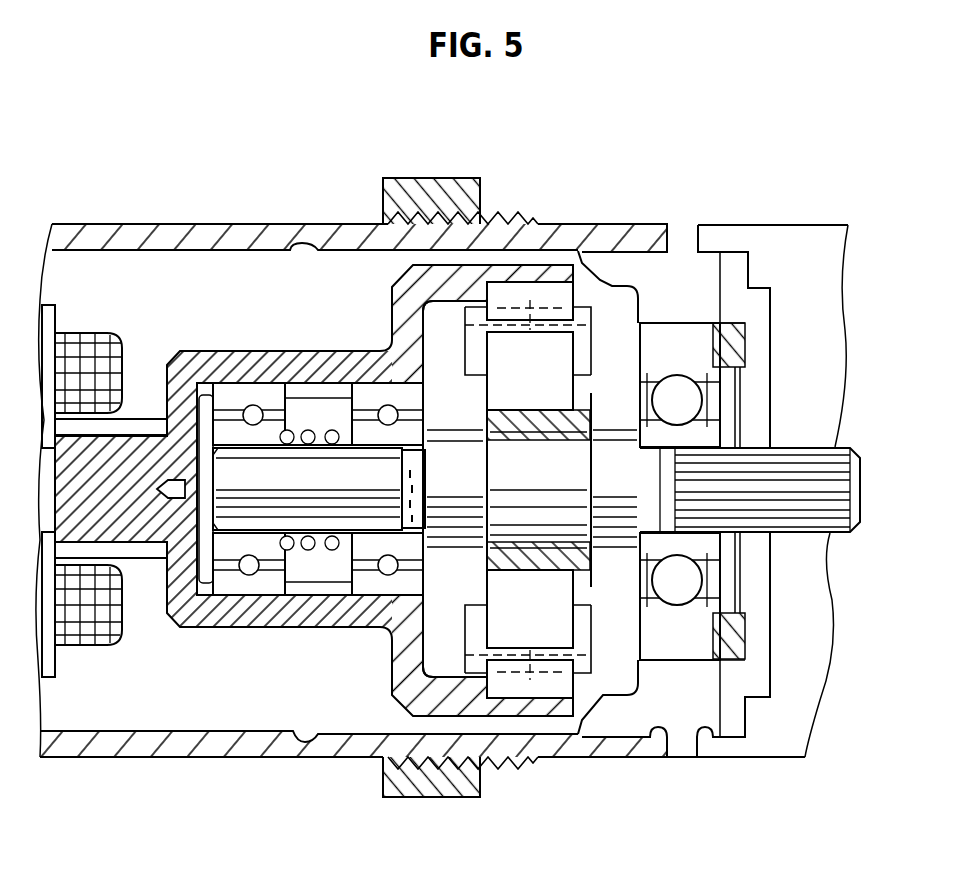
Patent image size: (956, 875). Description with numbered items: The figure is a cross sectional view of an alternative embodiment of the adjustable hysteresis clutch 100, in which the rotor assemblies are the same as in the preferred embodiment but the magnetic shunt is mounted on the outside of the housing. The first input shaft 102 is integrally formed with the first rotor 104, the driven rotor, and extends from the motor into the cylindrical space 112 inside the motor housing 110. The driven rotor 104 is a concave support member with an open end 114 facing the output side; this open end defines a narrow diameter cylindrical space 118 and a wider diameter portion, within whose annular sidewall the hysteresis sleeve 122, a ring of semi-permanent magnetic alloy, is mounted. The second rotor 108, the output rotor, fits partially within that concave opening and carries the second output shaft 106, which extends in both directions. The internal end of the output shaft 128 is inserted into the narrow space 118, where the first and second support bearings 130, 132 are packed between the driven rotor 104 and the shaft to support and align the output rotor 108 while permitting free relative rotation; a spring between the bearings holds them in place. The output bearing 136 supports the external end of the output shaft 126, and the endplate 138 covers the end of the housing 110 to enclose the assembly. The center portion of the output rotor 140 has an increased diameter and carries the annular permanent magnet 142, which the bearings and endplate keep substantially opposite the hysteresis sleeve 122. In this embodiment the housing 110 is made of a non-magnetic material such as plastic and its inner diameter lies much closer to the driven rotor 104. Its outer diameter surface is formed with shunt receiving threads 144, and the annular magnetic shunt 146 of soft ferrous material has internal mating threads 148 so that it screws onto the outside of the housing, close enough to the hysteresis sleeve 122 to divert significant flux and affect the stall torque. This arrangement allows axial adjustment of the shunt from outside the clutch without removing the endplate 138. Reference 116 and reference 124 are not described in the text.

The adjustable hysteresis clutch 100 is at (645, 766).
The first input shaft 102 is at (123, 517).
The first rotor 104 is at (385, 298).
The second output shaft 106 is at (805, 448).
The second rotor 108 is at (799, 491).
The motor housing 110 is at (230, 745).
The cylindrical space 112 is at (125, 715).
The open end 114 is at (703, 670).
The end face 116 is at (533, 717).
The narrow diameter cylindrical space 118 is at (280, 617).
The hysteresis sleeve 122 is at (568, 292).
The spring spacer 124 is at (310, 430).
The external end of the output shaft 126 is at (817, 568).
The internal end of the output shaft 128 is at (242, 465).
The first support bearing 130 is at (247, 575).
The second support bearing 132 is at (388, 575).
The output bearing 136 is at (853, 491).
The endplate 138 is at (710, 683).
The center portion of the output rotor 140 is at (498, 458).
The annular permanent magnet 142 is at (560, 360).
The shunt receiving threads 144 is at (512, 215).
The annular magnetic shunt 146 is at (447, 193).
The mating threads 148 is at (417, 200).